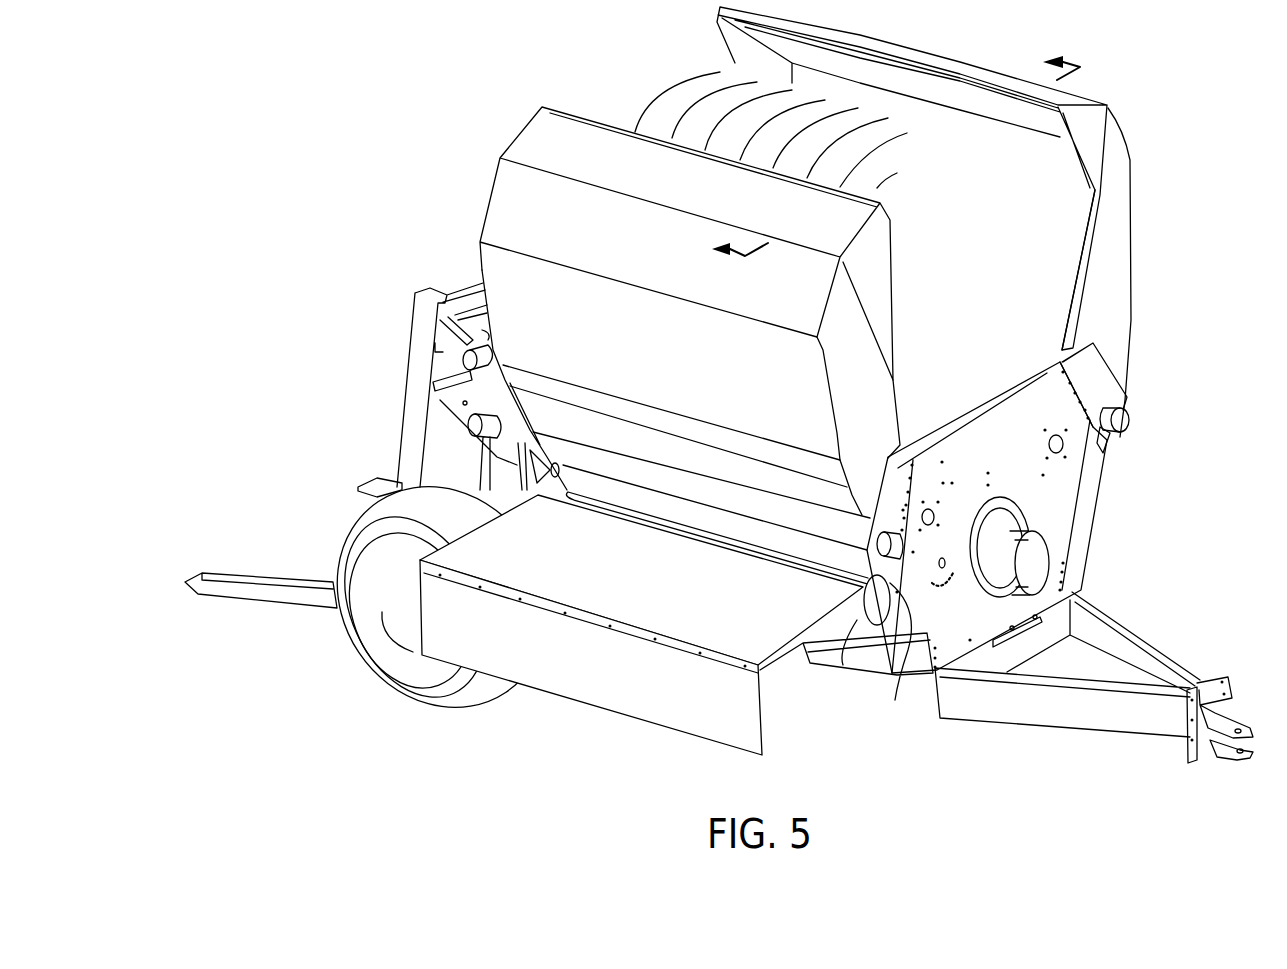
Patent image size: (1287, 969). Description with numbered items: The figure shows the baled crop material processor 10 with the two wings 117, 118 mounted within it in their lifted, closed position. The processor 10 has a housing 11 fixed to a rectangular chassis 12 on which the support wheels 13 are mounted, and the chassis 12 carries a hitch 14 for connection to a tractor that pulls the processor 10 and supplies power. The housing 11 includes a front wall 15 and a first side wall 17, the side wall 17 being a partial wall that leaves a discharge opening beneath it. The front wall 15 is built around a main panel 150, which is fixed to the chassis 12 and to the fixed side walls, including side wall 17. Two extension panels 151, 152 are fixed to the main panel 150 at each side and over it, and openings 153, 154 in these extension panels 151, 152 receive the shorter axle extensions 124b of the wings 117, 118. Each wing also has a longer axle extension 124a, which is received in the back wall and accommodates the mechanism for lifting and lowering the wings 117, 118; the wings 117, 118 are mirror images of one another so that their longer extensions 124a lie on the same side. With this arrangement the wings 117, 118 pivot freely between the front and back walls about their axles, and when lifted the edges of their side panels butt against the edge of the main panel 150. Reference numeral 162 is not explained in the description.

The baled crop material processor 10 is at (734, 385).
The housing 11 is at (988, 338).
The chassis 12 is at (1105, 605).
The support wheels 13 is at (397, 677).
The hitch 14 is at (1247, 727).
The front wall 15 is at (1077, 495).
The first side wall 17 is at (693, 515).
The wing 117 is at (500, 210).
The wing 118 is at (1120, 157).
The axle extension 124a is at (473, 398).
The axle extension 124b is at (1130, 418).
The main panel 150 is at (1050, 523).
The extension panel 151 is at (1122, 392).
The extension panel 152 is at (867, 553).
The opening 153 is at (1105, 440).
The opening 154 is at (843, 665).
The pivot arm 162 is at (513, 433).